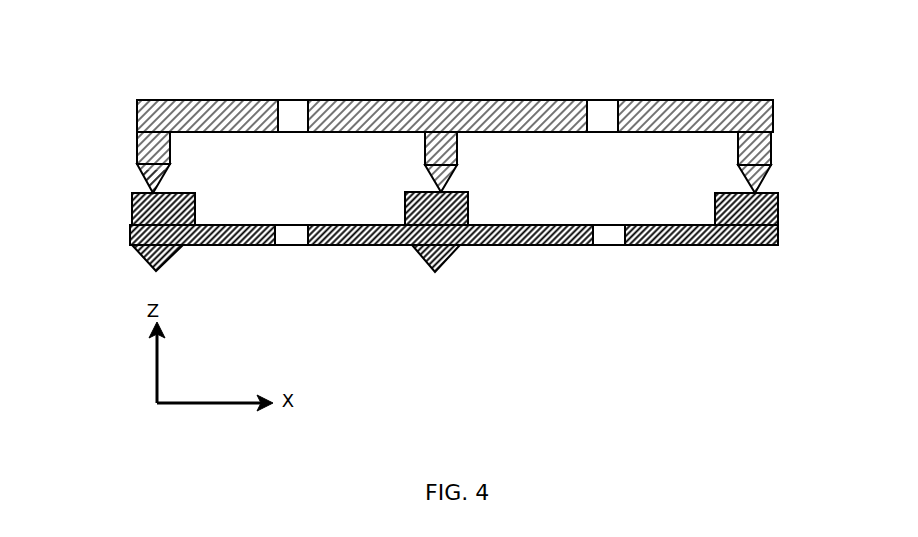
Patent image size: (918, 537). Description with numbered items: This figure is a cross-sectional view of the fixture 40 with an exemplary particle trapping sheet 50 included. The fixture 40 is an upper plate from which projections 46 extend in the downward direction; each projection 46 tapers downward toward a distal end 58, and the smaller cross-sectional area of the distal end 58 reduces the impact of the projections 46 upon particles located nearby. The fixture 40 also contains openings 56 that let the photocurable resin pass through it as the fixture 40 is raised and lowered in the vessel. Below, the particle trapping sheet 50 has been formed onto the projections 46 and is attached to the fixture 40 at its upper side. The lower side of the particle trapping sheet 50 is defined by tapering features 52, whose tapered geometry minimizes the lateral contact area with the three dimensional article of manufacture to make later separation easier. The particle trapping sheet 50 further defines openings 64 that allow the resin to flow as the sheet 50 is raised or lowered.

The fixture 40 is at (732, 110).
The projections 46 is at (148, 148).
The particle trapping sheet 50 is at (762, 240).
The tapering features 52 is at (162, 260).
The openings 56 is at (290, 112).
The distal end 58 is at (153, 190).
The openings 64 is at (605, 235).